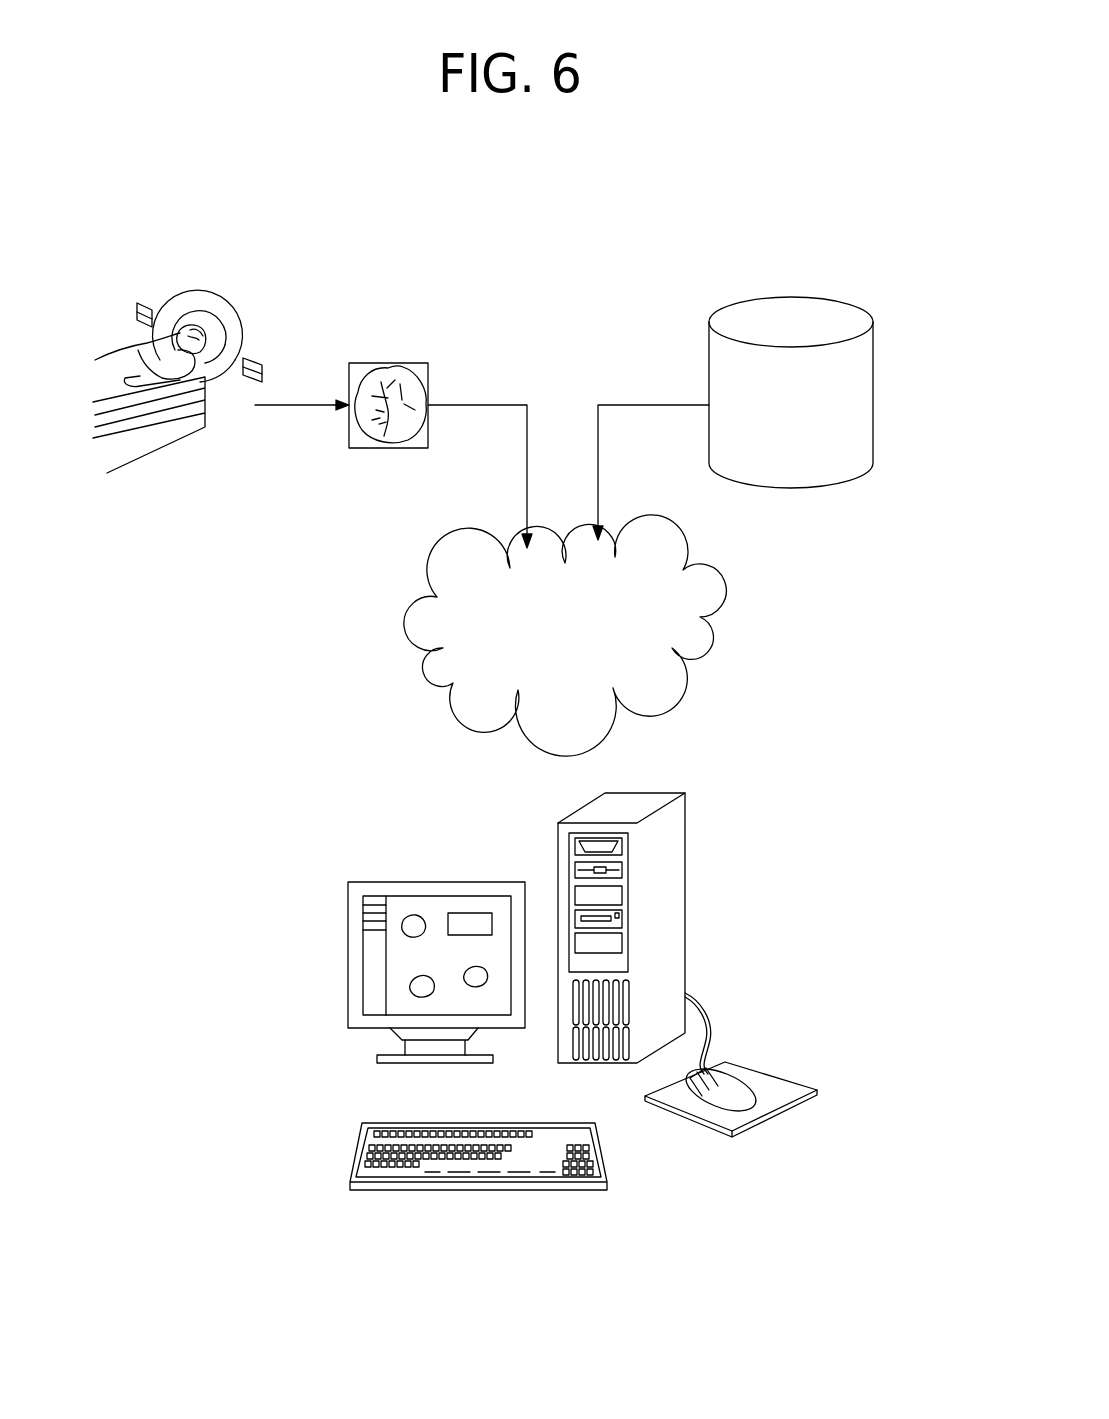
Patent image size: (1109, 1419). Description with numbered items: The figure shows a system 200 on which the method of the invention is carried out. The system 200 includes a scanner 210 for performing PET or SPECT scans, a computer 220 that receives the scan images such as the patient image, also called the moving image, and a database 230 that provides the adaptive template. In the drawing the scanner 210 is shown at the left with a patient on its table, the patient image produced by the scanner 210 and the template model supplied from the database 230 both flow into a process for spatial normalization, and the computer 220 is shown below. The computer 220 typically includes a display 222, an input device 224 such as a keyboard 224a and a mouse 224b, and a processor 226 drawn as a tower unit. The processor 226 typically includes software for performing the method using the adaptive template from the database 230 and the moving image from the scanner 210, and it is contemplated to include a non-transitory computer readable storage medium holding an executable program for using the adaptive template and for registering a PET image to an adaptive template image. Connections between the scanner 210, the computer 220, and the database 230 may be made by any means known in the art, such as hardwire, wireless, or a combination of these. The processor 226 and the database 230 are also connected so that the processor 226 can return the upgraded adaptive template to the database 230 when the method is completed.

The system 200 is at (572, 230).
The scanner 210 is at (233, 313).
The computer 220 is at (333, 921).
The display 222 is at (348, 988).
The input device 224 is at (742, 1016).
The keyboard 224a is at (467, 1189).
The mouse 224b is at (755, 1104).
The processor 226 is at (700, 884).
The database 230 is at (873, 363).